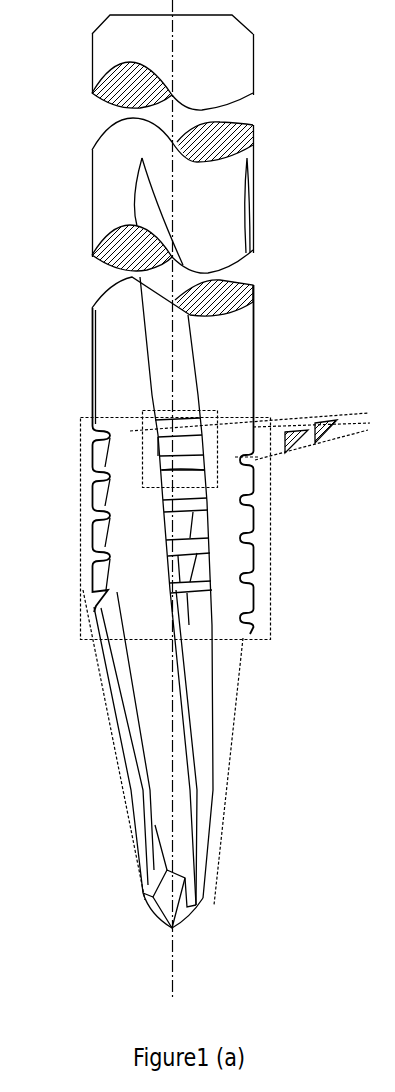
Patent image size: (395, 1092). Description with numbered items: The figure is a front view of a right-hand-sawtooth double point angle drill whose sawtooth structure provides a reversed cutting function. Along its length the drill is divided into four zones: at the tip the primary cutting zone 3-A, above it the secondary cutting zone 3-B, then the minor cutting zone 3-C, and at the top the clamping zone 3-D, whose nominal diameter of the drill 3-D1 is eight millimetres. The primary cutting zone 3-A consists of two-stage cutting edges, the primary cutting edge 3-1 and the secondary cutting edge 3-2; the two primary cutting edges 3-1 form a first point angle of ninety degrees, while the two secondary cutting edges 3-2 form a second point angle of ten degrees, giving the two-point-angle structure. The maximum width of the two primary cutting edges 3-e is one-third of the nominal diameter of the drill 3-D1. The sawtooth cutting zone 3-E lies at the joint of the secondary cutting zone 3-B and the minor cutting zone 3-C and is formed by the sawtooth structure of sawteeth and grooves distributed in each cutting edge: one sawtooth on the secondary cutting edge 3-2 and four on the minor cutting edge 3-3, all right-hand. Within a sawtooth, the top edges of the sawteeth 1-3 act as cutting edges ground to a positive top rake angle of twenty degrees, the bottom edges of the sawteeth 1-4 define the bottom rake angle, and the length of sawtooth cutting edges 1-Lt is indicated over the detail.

The clamping zone 3-D is at (253, 160).
The nominal diameter of the drill 3-D1 is at (253, 188).
The minor cutting zone 3-C is at (122, 538).
The minor cutting edge 3-3 is at (145, 342).
The top edges of the sawteeth 1-3 is at (178, 435).
The bottom edges of the sawteeth 1-4 is at (180, 460).
The length of sawtooth cutting edges 1-Lt is at (108, 447).
The sawtooth cutting zone 3-E is at (252, 639).
The secondary cutting edge 3-2 is at (185, 719).
The secondary cutting zone 3-B is at (66, 538).
The primary cutting edge 3-1 is at (172, 928).
The primary cutting zone 3-A is at (172, 928).
The maximum width of the two primary cutting edges 3-e is at (142, 895).